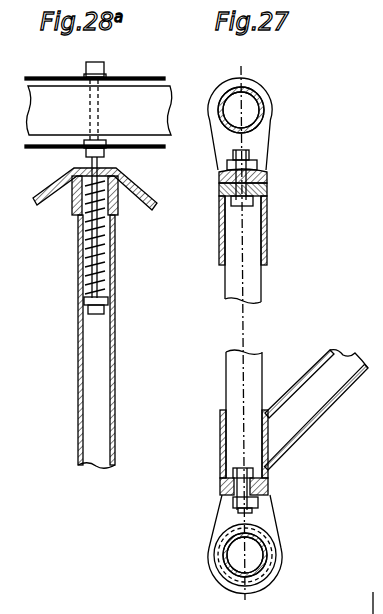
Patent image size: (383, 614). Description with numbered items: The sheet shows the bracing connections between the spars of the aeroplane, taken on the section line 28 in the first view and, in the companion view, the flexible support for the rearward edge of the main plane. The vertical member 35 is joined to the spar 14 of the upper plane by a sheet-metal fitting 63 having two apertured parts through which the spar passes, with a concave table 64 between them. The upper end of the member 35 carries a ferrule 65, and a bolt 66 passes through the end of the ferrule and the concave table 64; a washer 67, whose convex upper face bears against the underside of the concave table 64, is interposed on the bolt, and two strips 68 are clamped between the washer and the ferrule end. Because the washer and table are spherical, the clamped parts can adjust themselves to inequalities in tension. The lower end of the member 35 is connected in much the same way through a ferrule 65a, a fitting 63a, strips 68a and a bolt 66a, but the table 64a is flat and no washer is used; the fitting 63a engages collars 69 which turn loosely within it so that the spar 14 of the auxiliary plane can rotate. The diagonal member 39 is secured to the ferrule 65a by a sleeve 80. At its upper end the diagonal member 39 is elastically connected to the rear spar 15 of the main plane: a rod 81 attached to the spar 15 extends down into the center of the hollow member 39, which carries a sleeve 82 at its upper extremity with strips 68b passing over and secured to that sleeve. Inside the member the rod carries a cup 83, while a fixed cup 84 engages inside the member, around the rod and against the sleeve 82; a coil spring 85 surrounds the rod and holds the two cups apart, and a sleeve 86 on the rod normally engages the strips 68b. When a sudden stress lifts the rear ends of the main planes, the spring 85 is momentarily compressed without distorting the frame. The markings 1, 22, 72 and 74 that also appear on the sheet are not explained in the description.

In FIG. 28A, the bolt 1 is at (106, 72).
In FIG. 27, the spar 14 is at (258, 106).
In FIG. 28A, the rear spar 15 is at (133, 98).
In FIG. 28A, the plate 22 is at (165, 78).
In FIG. 27, the section line 28 is at (251, 331).
In FIG. 27, the vertical member 35 is at (255, 275).
In FIG. 28A, the diagonal member 39 is at (116, 380).
In FIG. 27, the diagonal member 39 is at (317, 410).
In FIG. 27, the fitting 63 is at (249, 124).
In FIG. 27, the fitting 63a is at (270, 525).
In FIG. 27, the concave table 64 is at (268, 171).
In FIG. 27, the table 64a is at (270, 488).
In FIG. 27, the ferrule 65 is at (267, 228).
In FIG. 27, the ferrule 65a is at (220, 450).
In FIG. 27, the bolt 66 is at (253, 201).
In FIG. 27, the bolt 66a is at (233, 475).
In FIG. 27, the washer 67 is at (268, 181).
In FIG. 27, the strips 68 is at (219, 185).
In FIG. 27, the strips 68a is at (222, 487).
In FIG. 28A, the strips 68b is at (148, 191).
In FIG. 27, the collars 69 is at (215, 553).
In FIG. 27, the member 72 is at (344, 604).
In FIG. 27, the member 74 is at (376, 595).
In FIG. 27, the sleeve 80 is at (296, 441).
In FIG. 28A, the rod 81 is at (95, 276).
In FIG. 28A, the sleeve 82 is at (79, 196).
In FIG. 28A, the cup 83 is at (88, 298).
In FIG. 28A, the fixed cup 84 is at (118, 208).
In FIG. 28A, the coil spring 85 is at (86, 248).
In FIG. 28A, the sleeve 86 is at (88, 148).